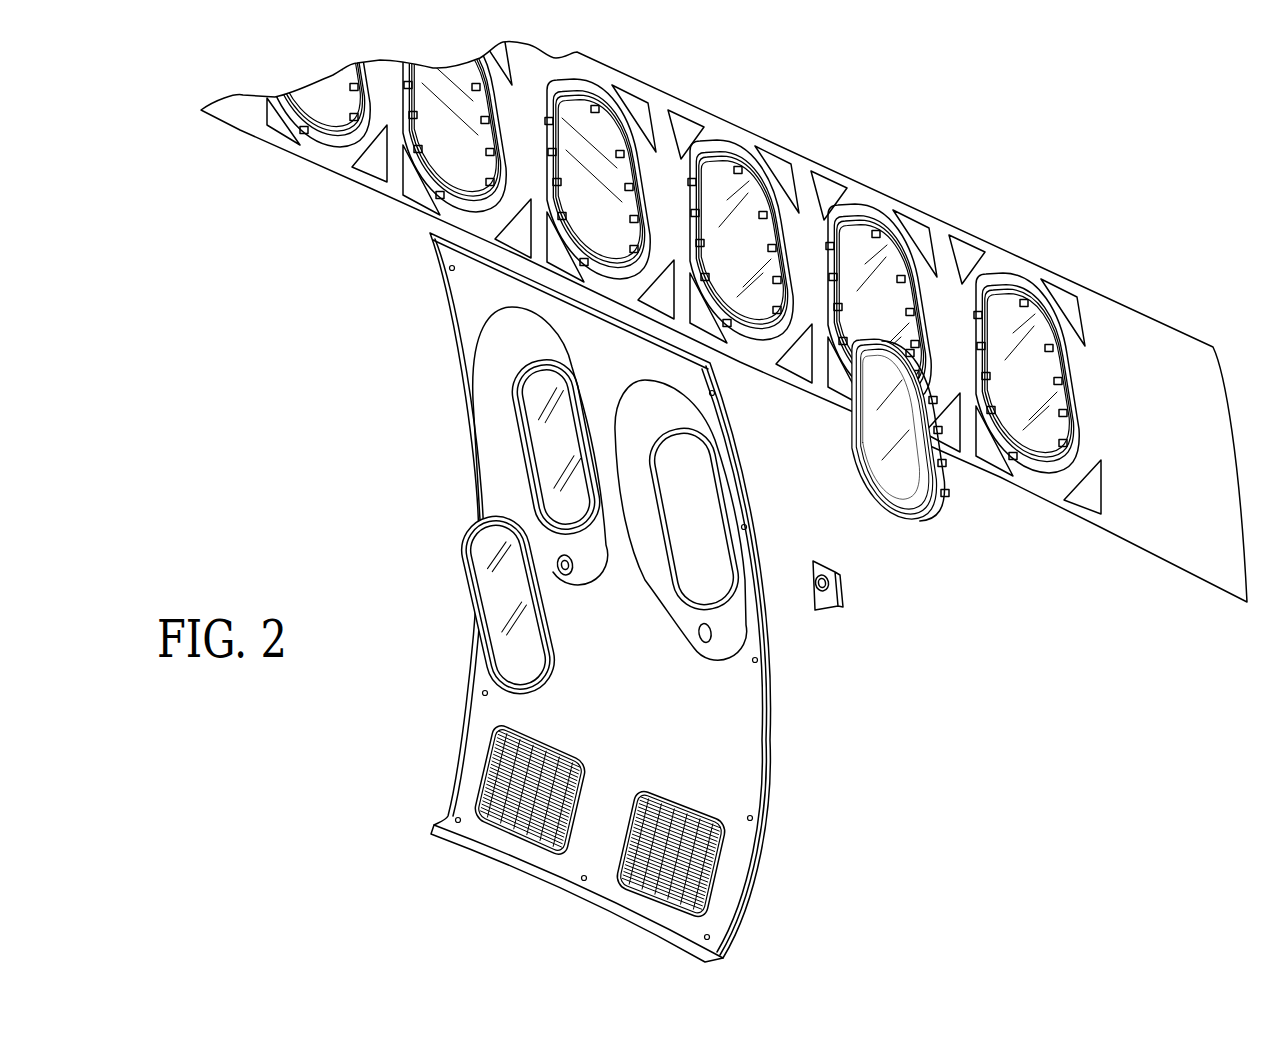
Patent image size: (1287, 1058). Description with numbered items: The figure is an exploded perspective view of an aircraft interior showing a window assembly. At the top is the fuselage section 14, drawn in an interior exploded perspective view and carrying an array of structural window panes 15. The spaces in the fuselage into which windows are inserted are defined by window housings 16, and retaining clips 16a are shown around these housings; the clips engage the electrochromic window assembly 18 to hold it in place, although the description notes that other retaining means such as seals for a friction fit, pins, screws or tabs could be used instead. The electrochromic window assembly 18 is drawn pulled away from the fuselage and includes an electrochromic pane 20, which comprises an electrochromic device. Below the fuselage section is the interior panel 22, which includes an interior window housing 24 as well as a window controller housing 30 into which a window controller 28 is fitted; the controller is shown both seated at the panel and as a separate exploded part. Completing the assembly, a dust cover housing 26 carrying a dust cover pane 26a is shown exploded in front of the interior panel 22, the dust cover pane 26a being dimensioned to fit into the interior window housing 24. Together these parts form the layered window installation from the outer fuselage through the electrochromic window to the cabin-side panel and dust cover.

The fuselage section 14 is at (724, 301).
The structural window panes 15 is at (856, 230).
The window housings 16 is at (758, 191).
The retaining clips 16a is at (742, 160).
The electrochromic window assembly 18 is at (898, 476).
The electrochromic pane 20 is at (882, 458).
The interior panel 22 is at (630, 597).
The interior window housing 24 is at (655, 418).
The dust cover housing 26 is at (454, 617).
The dust cover pane 26a is at (505, 617).
The window controller 28 is at (564, 578).
The window controller housing 30 is at (713, 641).